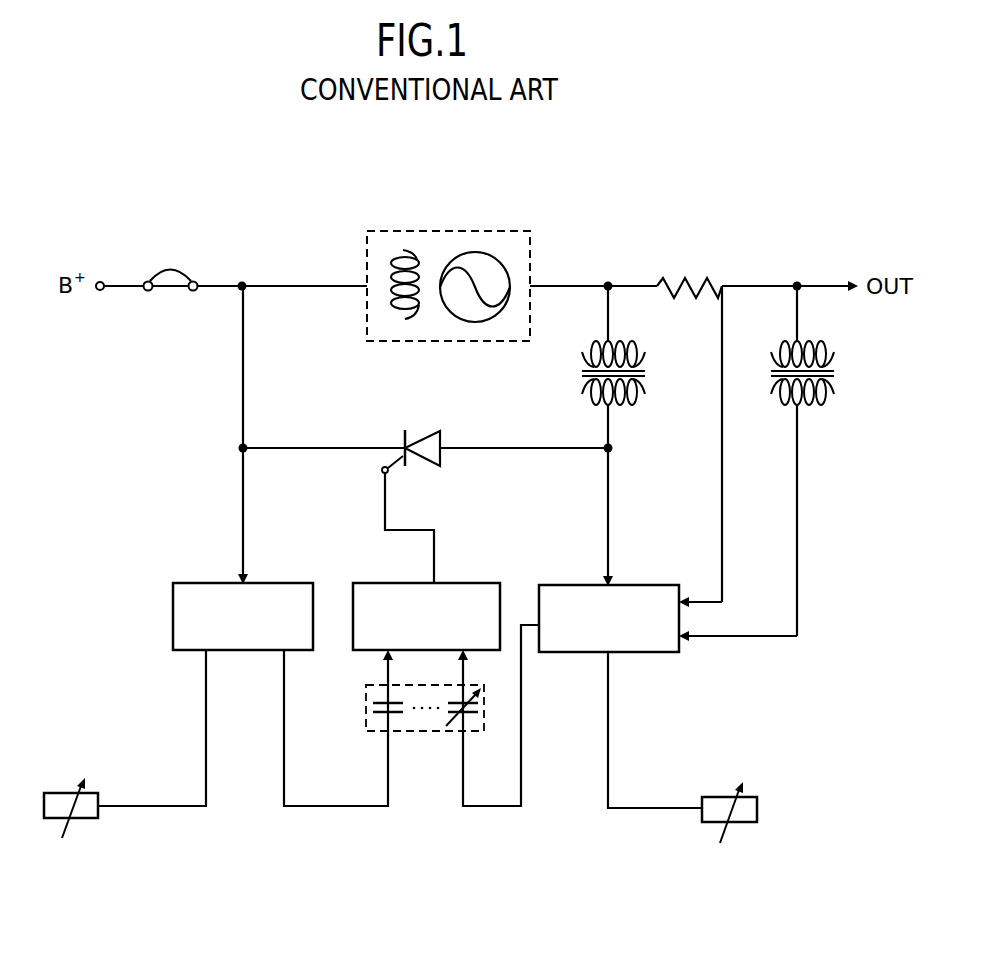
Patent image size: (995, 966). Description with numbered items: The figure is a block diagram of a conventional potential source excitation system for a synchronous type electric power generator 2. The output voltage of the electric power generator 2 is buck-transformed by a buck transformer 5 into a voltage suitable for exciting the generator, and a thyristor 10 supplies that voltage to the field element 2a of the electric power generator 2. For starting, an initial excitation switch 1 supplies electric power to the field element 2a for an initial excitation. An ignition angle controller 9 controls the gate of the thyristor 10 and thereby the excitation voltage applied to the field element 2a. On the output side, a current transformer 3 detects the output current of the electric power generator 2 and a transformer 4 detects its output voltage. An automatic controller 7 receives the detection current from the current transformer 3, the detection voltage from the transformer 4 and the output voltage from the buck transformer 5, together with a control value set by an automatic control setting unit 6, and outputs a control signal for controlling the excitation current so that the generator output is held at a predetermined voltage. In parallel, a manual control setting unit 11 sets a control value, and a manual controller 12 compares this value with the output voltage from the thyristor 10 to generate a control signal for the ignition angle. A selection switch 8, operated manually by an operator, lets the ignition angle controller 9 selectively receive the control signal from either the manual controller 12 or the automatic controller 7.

The initial excitation switch 1 is at (172, 266).
The electric power generator 2 is at (448, 278).
The field element 2a is at (405, 300).
The current transformer 3 is at (673, 280).
The transformer 4 is at (770, 384).
The buck transformer 5 is at (645, 371).
The automatic control setting unit 6 is at (722, 797).
The automatic controller 7 is at (646, 585).
The selection switch 8 is at (424, 733).
The ignition angle controller 9 is at (468, 584).
The thyristor 10 is at (428, 429).
The manual control setting unit 11 is at (64, 793).
The manual controller 12 is at (284, 584).